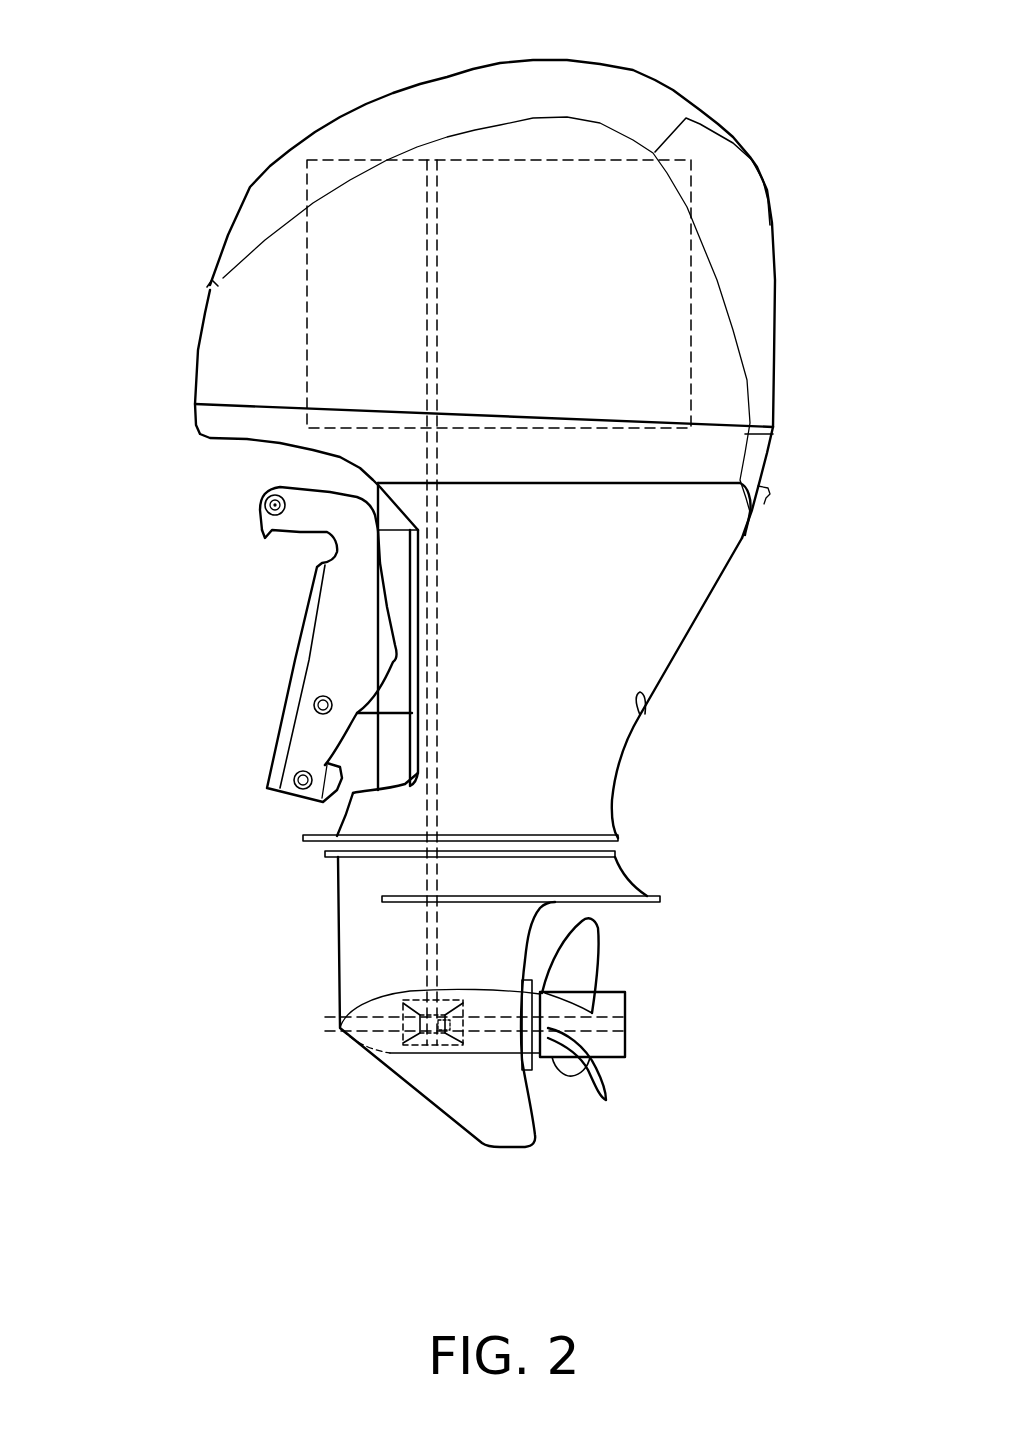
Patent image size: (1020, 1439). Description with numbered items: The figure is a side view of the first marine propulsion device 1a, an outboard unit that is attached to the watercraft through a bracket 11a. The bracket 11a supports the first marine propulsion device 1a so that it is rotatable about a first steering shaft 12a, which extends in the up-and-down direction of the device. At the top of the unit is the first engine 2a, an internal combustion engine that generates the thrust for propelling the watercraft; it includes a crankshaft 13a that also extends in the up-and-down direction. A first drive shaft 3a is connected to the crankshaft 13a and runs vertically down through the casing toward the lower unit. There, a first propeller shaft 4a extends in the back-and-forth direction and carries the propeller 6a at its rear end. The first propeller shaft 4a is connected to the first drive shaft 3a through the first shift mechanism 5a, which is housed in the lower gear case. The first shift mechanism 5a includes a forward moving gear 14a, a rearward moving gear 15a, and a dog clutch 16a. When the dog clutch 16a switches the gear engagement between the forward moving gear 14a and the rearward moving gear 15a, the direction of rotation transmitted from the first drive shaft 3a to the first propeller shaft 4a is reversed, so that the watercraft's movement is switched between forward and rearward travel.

The first marine propulsion device 1a is at (222, 90).
The first engine 2a is at (307, 275).
The first drive shaft 3a is at (437, 607).
The first propeller shaft 4a is at (505, 1030).
The first shift mechanism 5a is at (390, 1048).
The propeller 6a is at (570, 1075).
The bracket 11a is at (312, 600).
The first steering shaft 12a is at (390, 752).
The crankshaft 13a is at (428, 355).
The forward moving gear 14a is at (450, 1040).
The rearward moving gear 15a is at (407, 1021).
The dog clutch 16a is at (445, 1034).